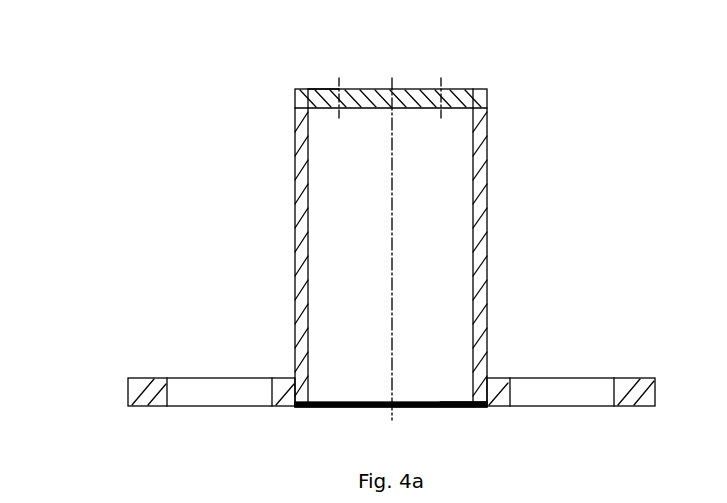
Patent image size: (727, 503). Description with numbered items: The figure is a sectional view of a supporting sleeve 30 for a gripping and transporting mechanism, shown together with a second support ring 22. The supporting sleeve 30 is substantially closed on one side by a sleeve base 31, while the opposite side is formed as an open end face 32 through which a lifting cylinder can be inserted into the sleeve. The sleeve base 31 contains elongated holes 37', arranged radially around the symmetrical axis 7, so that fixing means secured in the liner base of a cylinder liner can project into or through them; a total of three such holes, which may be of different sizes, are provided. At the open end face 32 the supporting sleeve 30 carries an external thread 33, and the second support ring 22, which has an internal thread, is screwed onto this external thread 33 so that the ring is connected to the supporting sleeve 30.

The symmetrical axis 7 is at (393, 222).
The second support ring 22 is at (130, 384).
The supporting sleeve 30 is at (290, 157).
The sleeve base 31 is at (413, 91).
The open end face 32 is at (332, 405).
The external thread 33 is at (465, 407).
The elongated holes 37' is at (275, 62).